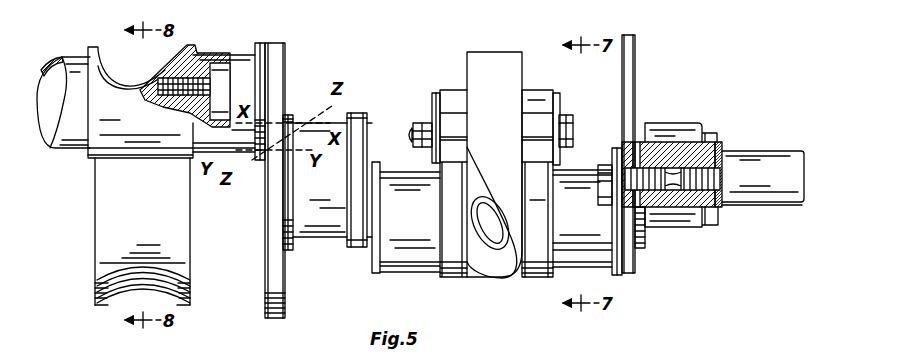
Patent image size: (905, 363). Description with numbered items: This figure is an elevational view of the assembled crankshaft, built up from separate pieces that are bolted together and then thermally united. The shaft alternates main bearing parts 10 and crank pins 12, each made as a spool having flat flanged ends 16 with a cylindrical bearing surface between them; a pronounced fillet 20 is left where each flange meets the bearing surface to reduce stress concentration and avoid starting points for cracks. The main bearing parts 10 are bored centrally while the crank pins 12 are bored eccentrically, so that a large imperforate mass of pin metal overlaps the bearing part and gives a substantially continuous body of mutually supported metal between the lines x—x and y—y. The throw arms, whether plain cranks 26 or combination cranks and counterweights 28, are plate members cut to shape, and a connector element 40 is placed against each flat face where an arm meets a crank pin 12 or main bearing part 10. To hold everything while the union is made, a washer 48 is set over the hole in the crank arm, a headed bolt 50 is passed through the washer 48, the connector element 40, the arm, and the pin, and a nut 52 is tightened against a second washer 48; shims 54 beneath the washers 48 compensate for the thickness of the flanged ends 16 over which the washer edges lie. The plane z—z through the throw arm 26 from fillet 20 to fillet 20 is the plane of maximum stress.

The main bearing part 10 is at (678, 120).
The crank pin 12 is at (62, 42).
The flat flanged end 16 is at (647, 246).
The fillet 20 is at (609, 266).
The crank 26 is at (275, 296).
The combination crank and counterweight 28 is at (88, 200).
The connector element 40 is at (265, 45).
The washer 48 is at (436, 92).
The headed bolt 50 is at (217, 83).
The nut 52 is at (416, 120).
The shim 54 is at (534, 92).